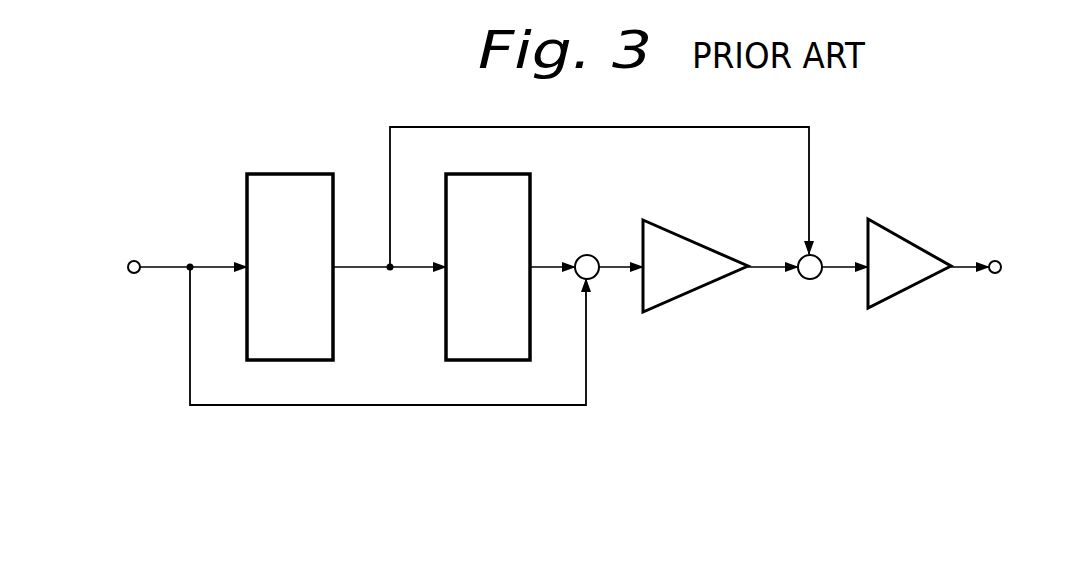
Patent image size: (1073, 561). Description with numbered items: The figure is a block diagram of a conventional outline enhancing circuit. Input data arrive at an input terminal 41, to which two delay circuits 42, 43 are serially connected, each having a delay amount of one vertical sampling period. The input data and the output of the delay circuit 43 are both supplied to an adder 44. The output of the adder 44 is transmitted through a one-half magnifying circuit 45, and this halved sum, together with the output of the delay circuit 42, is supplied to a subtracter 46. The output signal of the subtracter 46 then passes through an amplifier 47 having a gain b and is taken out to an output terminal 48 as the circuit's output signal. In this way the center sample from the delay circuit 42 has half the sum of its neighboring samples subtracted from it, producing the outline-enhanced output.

The input terminal 41 is at (134, 273).
The delay circuit 42 is at (247, 215).
The delay circuit 43 is at (446, 308).
The adder 44 is at (587, 254).
The ½ magnifying circuit 45 is at (712, 284).
The subtracter 46 is at (810, 279).
The amplifier 47 is at (925, 284).
The output terminal 48 is at (995, 260).